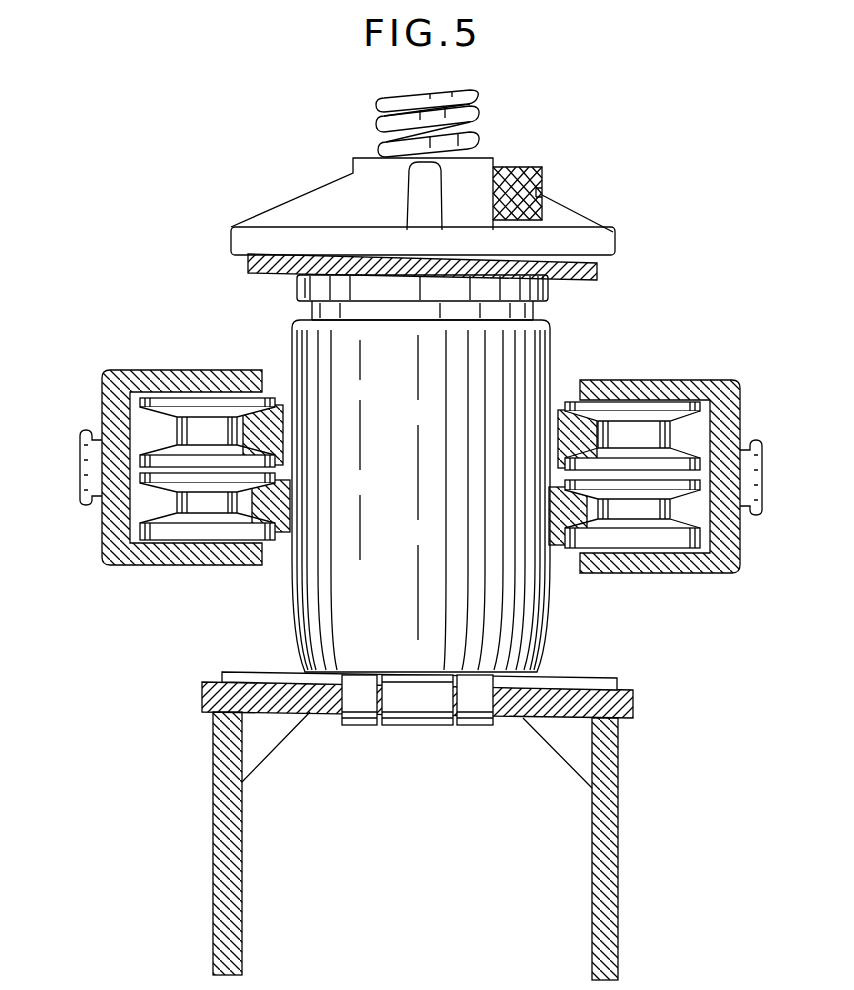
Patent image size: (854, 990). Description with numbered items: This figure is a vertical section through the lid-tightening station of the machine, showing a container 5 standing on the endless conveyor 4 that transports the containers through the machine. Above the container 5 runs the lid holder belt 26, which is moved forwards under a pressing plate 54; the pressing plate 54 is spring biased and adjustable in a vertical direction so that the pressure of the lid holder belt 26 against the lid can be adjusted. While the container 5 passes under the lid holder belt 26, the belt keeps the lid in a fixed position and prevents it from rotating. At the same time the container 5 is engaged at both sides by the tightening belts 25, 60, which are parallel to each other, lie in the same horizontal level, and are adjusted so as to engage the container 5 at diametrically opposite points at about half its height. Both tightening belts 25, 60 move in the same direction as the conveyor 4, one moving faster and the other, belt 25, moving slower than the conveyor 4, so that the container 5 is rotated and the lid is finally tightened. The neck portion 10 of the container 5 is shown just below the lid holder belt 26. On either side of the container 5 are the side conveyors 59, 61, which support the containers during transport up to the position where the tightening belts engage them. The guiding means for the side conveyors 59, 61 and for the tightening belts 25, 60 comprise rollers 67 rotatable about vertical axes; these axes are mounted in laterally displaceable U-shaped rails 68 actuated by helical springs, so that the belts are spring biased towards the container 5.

The pressing plate 54 is at (573, 252).
The lid holder belt 26 is at (585, 279).
The neck ring 10 is at (297, 297).
The container 5 is at (305, 643).
The side conveyor 59 is at (283, 404).
The tightening belt 25 is at (284, 534).
The side conveyor 61 is at (558, 409).
The tightening belt 60 is at (556, 547).
The roller 67 is at (633, 425).
The bracket 68 is at (725, 384).
The endless conveyor 4 is at (525, 682).